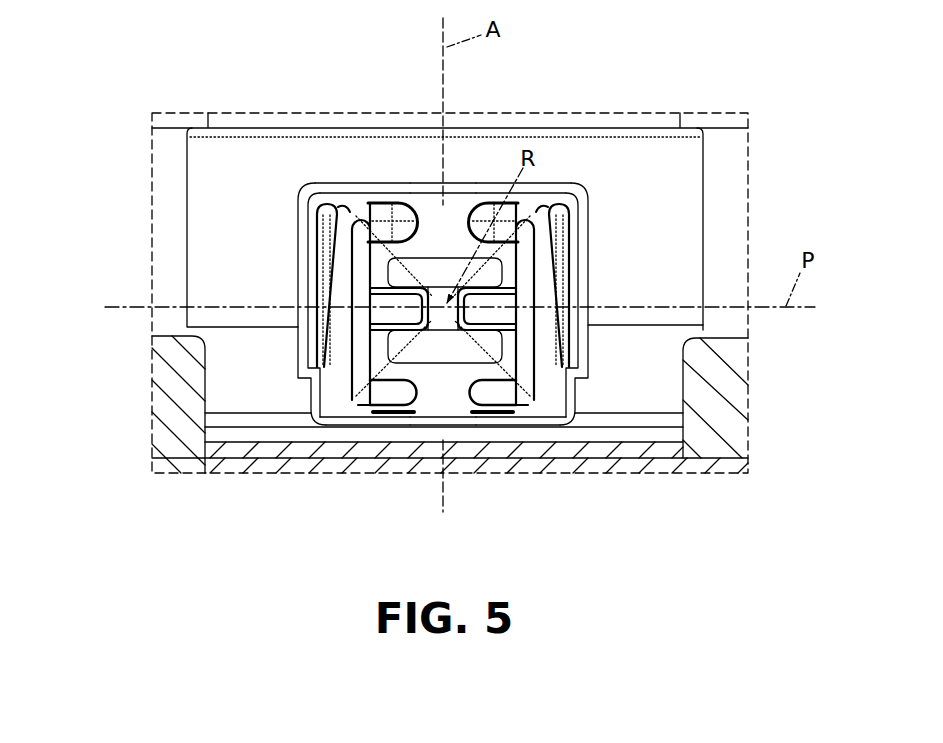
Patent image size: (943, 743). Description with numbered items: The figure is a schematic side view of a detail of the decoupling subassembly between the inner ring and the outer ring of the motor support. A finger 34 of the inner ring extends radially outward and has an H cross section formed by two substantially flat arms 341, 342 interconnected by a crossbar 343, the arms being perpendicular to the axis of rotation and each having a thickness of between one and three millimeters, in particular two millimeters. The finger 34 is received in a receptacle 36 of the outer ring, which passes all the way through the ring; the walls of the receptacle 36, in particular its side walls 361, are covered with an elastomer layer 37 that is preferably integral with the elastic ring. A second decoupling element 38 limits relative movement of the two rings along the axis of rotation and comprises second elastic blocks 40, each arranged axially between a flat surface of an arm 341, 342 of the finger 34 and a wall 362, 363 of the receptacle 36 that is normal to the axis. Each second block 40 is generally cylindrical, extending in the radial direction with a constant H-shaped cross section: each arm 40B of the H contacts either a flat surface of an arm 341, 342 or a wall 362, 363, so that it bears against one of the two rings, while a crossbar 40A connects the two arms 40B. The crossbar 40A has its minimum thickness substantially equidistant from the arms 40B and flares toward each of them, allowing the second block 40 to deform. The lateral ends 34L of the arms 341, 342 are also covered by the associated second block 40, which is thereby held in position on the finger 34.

The finger 34 is at (347, 363).
The arm 341 is at (425, 273).
The arm 342 is at (400, 337).
The crossbar 343 is at (400, 313).
The lateral ends 34L is at (383, 273).
The receptacle 36 is at (443, 295).
The side walls 361 is at (622, 236).
The wall 362 is at (538, 206).
The wall 363 is at (348, 404).
The elastomer layer 37 is at (592, 200).
The second decoupling element 38 is at (353, 217).
The second elastic block 40 is at (412, 301).
The crossbar 40A is at (440, 217).
The arm 40B is at (392, 228).